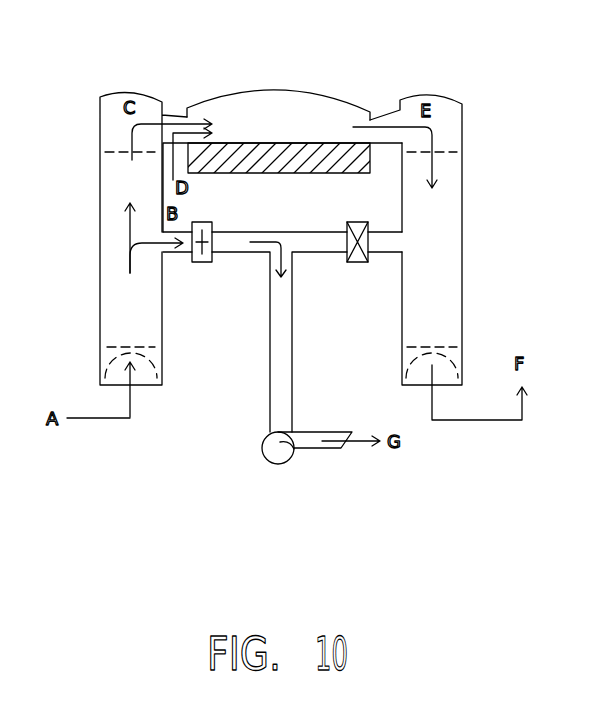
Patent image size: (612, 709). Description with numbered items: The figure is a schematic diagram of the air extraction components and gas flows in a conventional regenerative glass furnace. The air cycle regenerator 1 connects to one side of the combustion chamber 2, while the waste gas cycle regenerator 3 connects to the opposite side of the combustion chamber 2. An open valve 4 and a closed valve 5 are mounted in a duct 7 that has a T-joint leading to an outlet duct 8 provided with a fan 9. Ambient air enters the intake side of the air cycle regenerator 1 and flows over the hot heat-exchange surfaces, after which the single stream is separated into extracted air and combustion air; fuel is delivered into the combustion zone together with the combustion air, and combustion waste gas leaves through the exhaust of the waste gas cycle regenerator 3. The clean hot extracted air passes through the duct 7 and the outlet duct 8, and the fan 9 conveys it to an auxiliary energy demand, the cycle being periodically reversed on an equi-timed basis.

The air cycle regenerator 1 is at (100, 267).
The combustion chamber 2 is at (268, 91).
The waste gas cycle regenerator 3 is at (462, 247).
The open valve 4 is at (203, 262).
The closed valve 5 is at (356, 262).
The duct 7 is at (262, 232).
The outlet duct 8 is at (330, 449).
The fan 9 is at (264, 461).